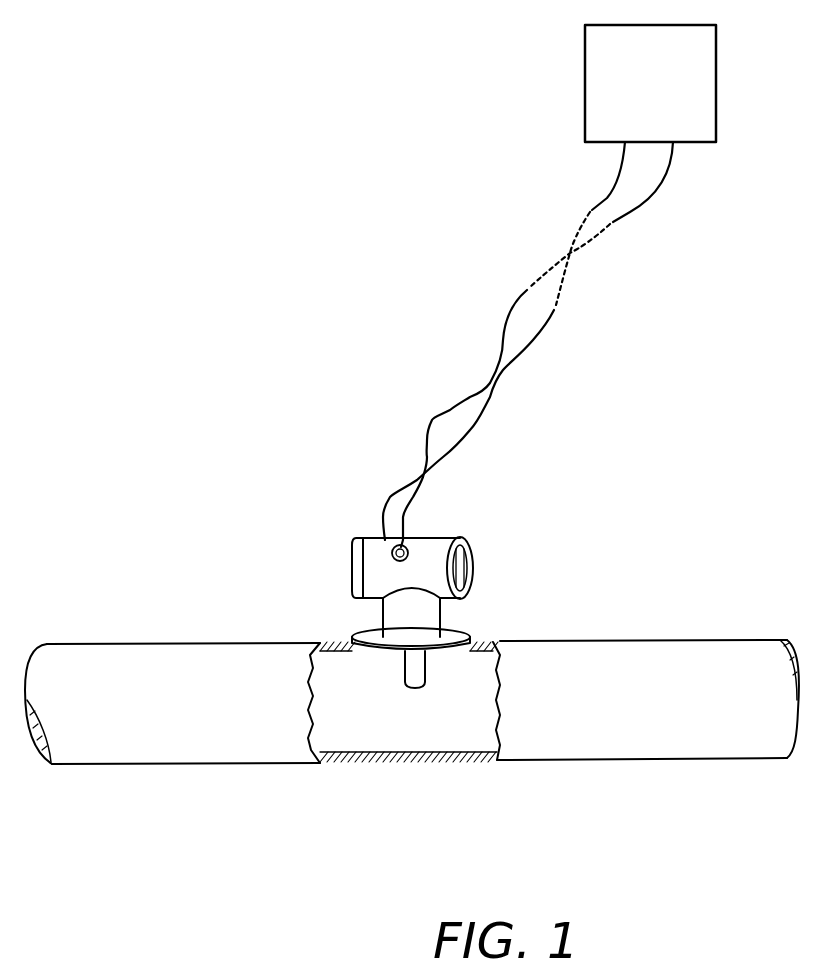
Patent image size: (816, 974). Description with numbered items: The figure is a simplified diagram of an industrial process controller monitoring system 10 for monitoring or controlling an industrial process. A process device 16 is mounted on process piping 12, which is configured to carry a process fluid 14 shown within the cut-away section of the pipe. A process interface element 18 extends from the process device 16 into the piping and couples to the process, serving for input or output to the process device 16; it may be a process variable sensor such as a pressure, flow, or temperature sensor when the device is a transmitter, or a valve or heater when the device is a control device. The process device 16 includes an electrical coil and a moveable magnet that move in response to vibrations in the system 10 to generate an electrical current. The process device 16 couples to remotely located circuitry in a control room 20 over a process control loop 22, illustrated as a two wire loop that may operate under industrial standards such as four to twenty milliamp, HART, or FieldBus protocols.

The industrial process controller monitoring system 10 is at (230, 199).
The process piping 12 is at (557, 650).
The process fluid 14 is at (680, 703).
The process device 16 is at (362, 548).
The process interface element 18 is at (405, 673).
The control room 20 is at (666, 93).
The process control loop 22 is at (490, 410).